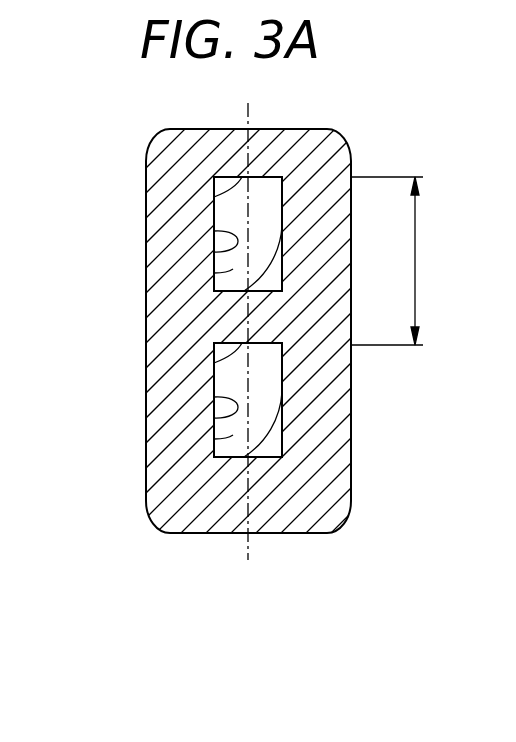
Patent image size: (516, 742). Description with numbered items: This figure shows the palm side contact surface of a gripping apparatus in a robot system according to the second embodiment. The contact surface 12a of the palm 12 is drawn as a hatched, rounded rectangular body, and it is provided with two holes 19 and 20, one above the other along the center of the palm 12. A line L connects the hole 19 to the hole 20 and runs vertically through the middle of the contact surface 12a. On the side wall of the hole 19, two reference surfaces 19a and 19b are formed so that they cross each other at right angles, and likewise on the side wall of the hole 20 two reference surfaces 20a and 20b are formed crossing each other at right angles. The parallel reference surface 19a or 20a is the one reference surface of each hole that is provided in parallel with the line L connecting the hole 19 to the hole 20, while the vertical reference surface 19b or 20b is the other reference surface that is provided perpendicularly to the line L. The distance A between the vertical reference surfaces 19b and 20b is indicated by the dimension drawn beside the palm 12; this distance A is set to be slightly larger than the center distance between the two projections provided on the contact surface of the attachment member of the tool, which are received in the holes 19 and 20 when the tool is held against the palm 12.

The palm 12 is at (258, 372).
The contact surface 12a is at (333, 143).
The hole 19 is at (153, 247).
The parallel reference surface 19a is at (213, 257).
The vertical reference surface 19b is at (214, 197).
The hole 20 is at (152, 415).
The parallel reference surface 20a is at (213, 421).
The vertical reference surface 20b is at (214, 363).
The line L is at (249, 468).
The distance A is at (387, 261).